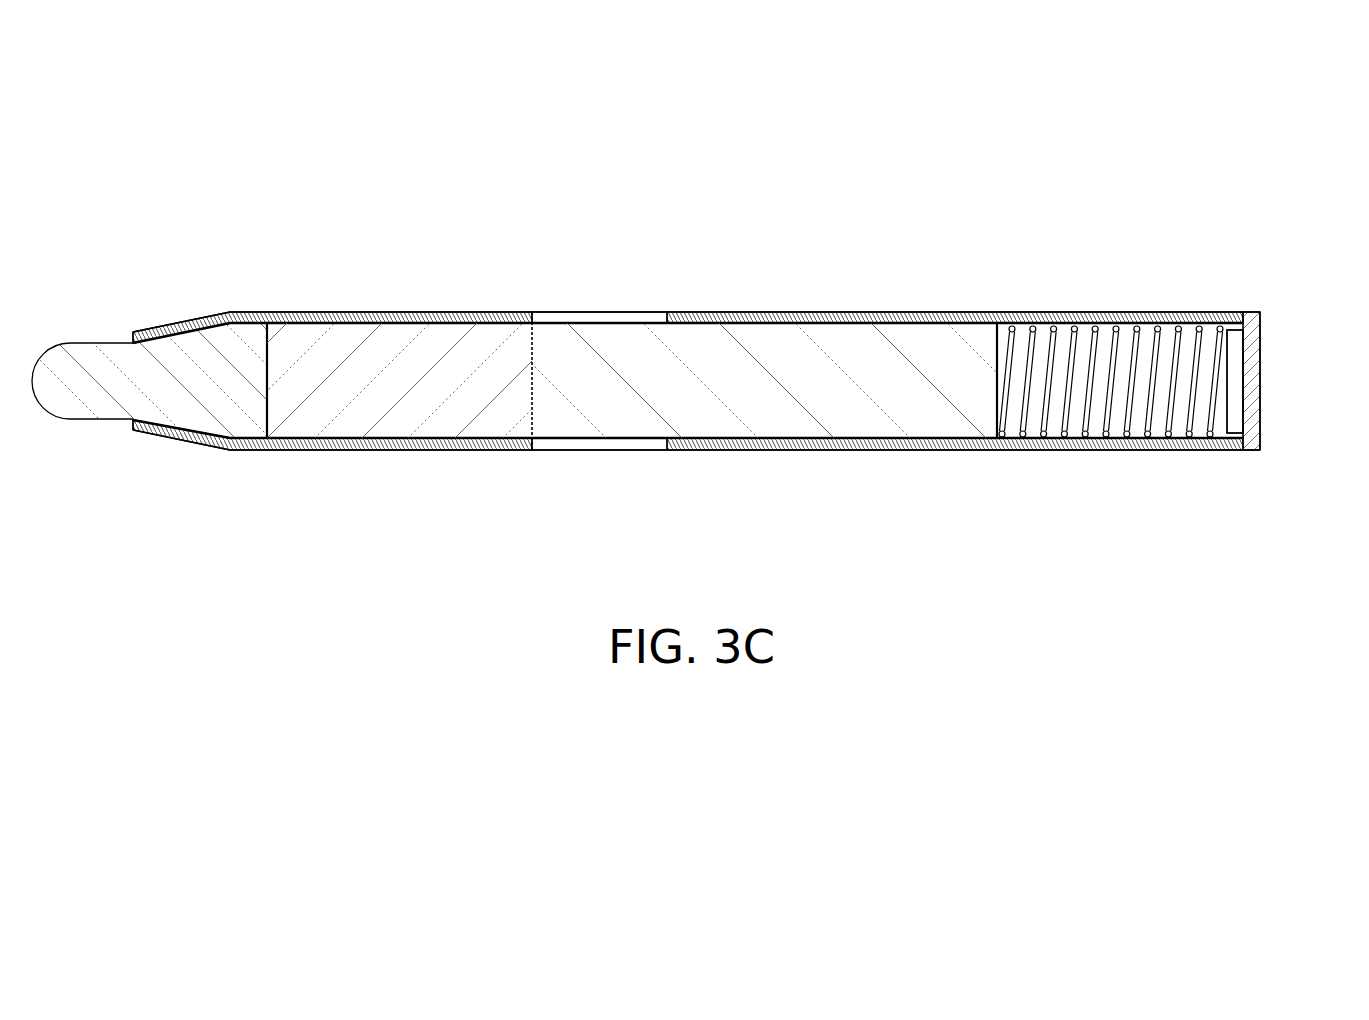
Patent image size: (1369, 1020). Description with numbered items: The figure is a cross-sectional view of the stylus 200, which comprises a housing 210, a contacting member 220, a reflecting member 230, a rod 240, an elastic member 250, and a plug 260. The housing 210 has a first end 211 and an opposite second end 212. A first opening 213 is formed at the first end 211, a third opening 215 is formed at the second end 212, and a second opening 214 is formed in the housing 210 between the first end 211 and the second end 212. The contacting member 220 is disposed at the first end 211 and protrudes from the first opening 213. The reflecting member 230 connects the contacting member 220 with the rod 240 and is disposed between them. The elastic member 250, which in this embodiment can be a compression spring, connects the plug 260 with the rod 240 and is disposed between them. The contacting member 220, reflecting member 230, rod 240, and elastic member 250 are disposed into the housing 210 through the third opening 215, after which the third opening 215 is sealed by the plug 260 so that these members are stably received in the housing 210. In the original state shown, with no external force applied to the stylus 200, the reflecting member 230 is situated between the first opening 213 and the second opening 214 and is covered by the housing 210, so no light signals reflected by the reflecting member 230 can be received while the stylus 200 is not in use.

The stylus 200 is at (1318, 248).
The housing 210 is at (293, 312).
The first end 211 is at (137, 460).
The second end 212 is at (1260, 468).
The first opening 213 is at (133, 420).
The second opening 214 is at (540, 318).
The third opening 215 is at (1244, 445).
The contacting member 220 is at (69, 367).
The reflecting member 230 is at (398, 345).
The rod 240 is at (762, 342).
The elastic member 250 is at (1113, 323).
The plug 260 is at (1262, 378).